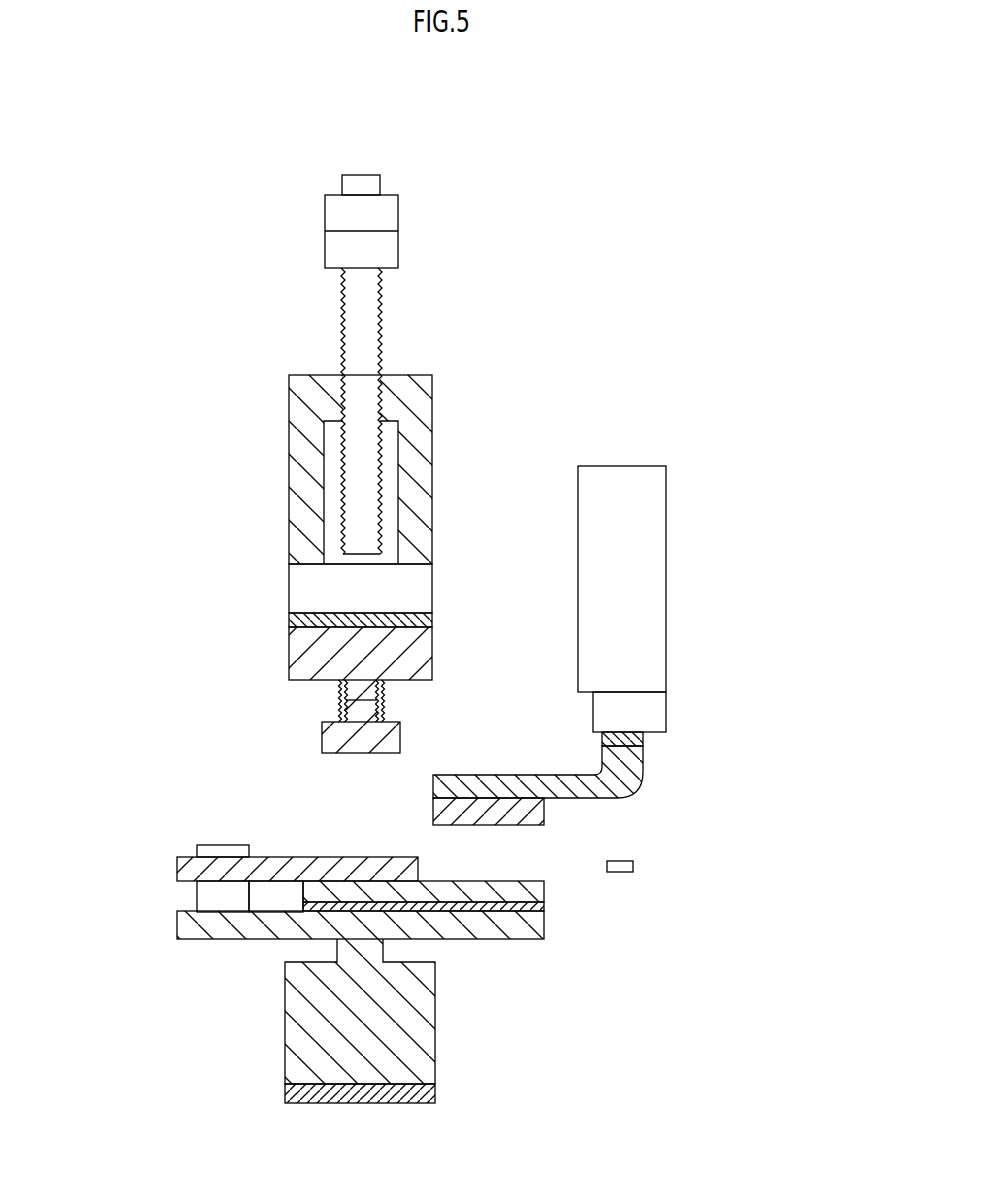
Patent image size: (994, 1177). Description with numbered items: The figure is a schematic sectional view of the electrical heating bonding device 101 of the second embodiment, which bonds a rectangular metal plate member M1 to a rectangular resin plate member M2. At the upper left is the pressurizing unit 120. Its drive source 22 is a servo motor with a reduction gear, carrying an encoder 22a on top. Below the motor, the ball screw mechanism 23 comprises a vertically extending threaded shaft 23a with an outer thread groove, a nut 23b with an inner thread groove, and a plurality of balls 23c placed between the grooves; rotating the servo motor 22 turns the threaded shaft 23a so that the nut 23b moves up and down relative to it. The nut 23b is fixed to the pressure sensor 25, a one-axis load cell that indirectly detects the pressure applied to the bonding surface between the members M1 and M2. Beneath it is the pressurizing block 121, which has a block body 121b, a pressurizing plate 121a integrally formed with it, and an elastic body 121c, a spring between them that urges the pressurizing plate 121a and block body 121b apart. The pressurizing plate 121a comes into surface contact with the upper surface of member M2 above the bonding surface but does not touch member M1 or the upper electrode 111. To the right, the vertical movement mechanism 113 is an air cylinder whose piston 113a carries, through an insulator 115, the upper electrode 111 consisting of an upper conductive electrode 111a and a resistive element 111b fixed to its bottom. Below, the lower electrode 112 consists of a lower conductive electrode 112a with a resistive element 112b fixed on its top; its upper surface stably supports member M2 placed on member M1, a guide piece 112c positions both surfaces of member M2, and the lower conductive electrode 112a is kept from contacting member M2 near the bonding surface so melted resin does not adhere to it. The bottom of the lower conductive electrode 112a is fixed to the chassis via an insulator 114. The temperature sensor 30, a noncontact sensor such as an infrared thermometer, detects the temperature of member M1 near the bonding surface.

The electrical heating bonding device 101 is at (605, 162).
The drive source 22 is at (347, 221).
The encoder 22a is at (352, 186).
The ball screw mechanism 23 is at (308, 456).
The threaded shaft 23a is at (358, 322).
The nut 23b is at (310, 458).
The balls 23c is at (335, 395).
The pressure sensor 25 is at (300, 582).
The pressurizing unit 120 is at (262, 614).
The pressurizing block 121 is at (293, 693).
The pressurizing plate 121a is at (330, 735).
The block body 121b is at (290, 652).
The elastic body 121c is at (345, 703).
The vertical movement mechanism 113 is at (655, 520).
The piston 113a is at (657, 705).
The insulator 115 is at (645, 737).
The upper electrode 111 is at (642, 759).
The upper conductive electrode 111a is at (645, 760).
The resistive element 111b is at (540, 815).
The lower electrode 112 is at (330, 959).
The lower conductive electrode 112a is at (285, 1020).
The resistive element 112b is at (540, 907).
The guide piece 112c is at (205, 848).
The insulator 114 is at (285, 1090).
The member to be bonded M1 is at (535, 888).
The member to be bonded M2 is at (185, 867).
The temperature sensor 30 is at (635, 866).